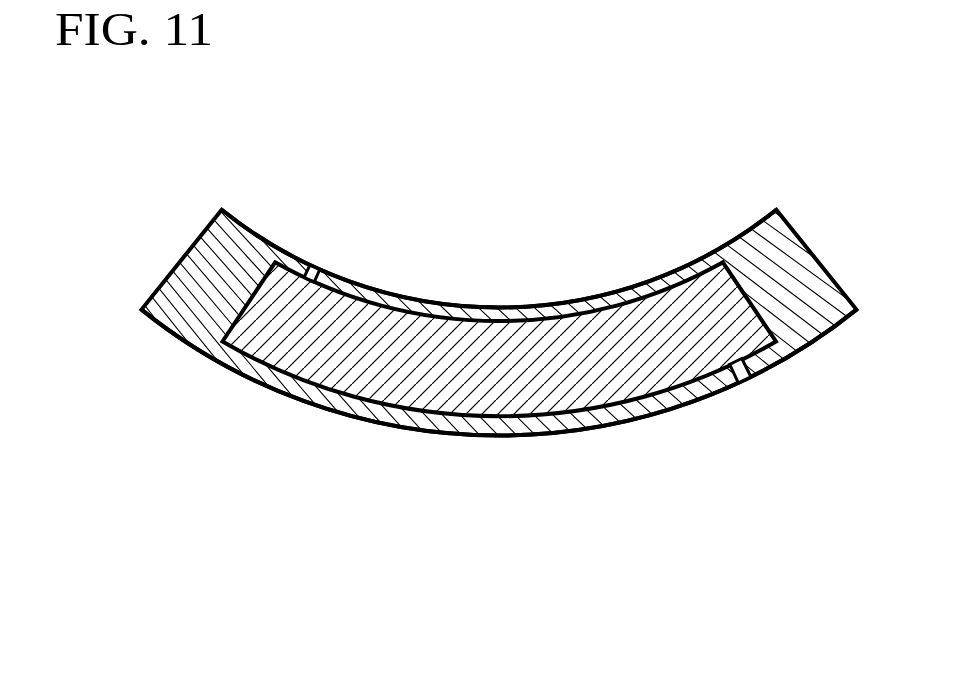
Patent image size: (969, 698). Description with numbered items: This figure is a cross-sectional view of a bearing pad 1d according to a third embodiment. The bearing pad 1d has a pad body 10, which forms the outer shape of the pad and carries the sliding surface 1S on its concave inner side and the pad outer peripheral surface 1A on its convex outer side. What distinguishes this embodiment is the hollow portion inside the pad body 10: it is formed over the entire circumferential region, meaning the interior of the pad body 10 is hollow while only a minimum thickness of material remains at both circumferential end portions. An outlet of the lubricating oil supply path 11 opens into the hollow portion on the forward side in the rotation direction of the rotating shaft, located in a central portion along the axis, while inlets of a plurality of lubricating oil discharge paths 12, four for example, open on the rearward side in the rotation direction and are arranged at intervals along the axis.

The bearing pad 1d is at (178, 160).
The pad body 10 is at (185, 272).
The sliding surface 1S is at (490, 305).
The pad outer peripheral surface 1A is at (640, 419).
The lubricating oil discharge path 12 is at (314, 267).
The lubricating oil supply path 11 is at (741, 384).